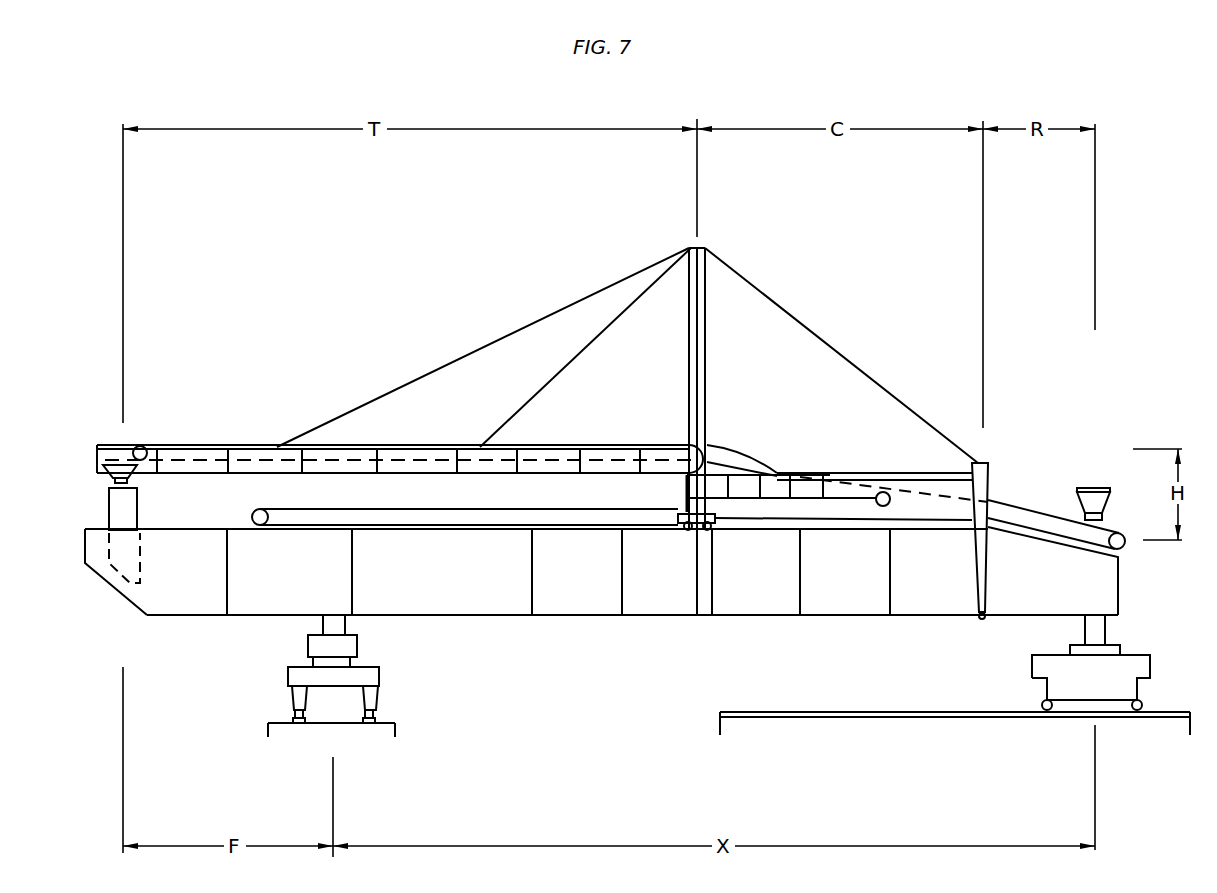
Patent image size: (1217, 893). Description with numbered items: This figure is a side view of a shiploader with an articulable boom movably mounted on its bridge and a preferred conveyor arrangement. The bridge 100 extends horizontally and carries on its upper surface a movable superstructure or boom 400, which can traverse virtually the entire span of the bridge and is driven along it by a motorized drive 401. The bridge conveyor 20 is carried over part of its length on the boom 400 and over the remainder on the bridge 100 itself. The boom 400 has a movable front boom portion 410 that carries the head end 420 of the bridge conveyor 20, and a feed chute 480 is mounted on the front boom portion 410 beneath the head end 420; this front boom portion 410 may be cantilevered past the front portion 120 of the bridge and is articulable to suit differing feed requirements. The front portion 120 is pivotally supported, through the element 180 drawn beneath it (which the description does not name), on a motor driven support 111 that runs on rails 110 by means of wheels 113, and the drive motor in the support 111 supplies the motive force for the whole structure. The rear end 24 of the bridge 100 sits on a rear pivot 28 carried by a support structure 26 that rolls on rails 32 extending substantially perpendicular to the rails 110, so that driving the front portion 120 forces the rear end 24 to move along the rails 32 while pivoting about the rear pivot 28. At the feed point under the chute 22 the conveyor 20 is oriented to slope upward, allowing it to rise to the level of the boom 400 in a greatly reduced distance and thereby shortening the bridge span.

The bridge conveyor 20 is at (557, 447).
The chute 22 is at (1090, 486).
The rear end of the bridge 24 is at (1120, 573).
The support structure 26 is at (1150, 665).
The rear pivot 28 is at (1104, 627).
The rails 32 is at (917, 712).
The bridge 100 is at (568, 615).
The rails 110 is at (300, 725).
The motor driven support 111 is at (379, 678).
The wheels 113 is at (373, 712).
The front portion of the bridge 120 is at (187, 615).
The front support pedestal 180 is at (323, 623).
The boom 400 is at (706, 378).
The motorized drive 401 is at (696, 617).
The front boom portion 410 is at (165, 477).
The head end of bridge conveyor 420 is at (143, 447).
The feed chute 480 is at (108, 514).